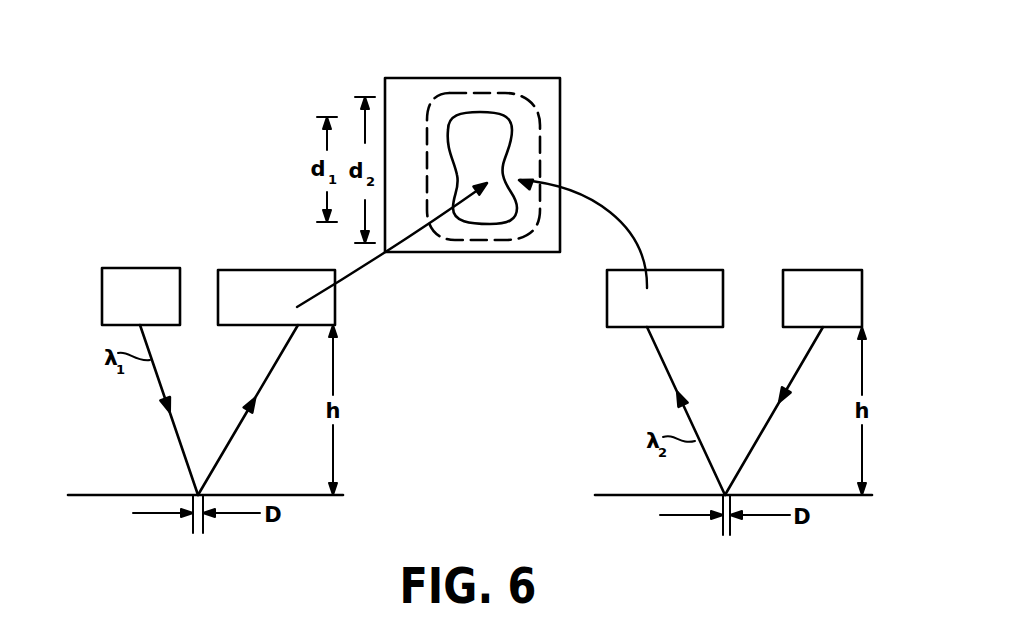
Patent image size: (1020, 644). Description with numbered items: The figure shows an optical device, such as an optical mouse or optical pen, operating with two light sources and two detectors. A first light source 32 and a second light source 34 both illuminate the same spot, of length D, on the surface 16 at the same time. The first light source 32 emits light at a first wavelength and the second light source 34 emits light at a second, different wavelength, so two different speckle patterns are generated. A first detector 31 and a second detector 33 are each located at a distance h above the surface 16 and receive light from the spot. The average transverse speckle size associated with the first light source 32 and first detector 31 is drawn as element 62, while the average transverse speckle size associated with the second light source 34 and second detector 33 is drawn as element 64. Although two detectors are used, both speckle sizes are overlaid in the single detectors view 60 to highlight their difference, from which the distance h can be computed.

The surface 16 is at (102, 495).
The first detector 31 is at (257, 292).
The first light source 32 is at (140, 292).
The second detector 33 is at (685, 288).
The second light source 34 is at (822, 288).
The detectors view 60 is at (546, 230).
The average transverse speckle size d1 62 is at (467, 151).
The average transverse speckle size d2 64 is at (525, 128).